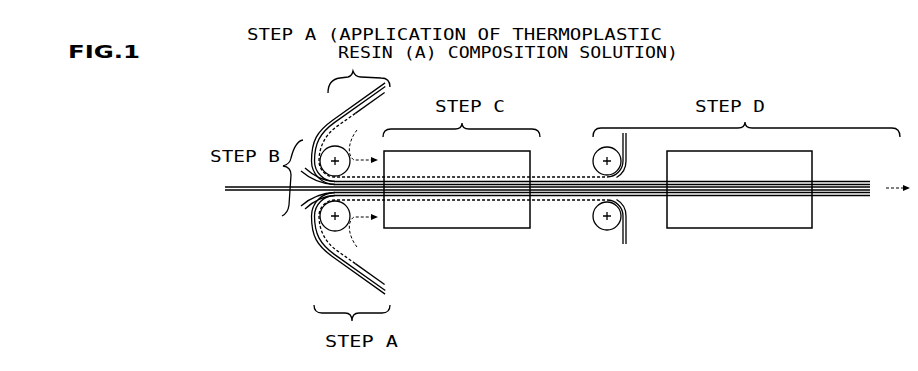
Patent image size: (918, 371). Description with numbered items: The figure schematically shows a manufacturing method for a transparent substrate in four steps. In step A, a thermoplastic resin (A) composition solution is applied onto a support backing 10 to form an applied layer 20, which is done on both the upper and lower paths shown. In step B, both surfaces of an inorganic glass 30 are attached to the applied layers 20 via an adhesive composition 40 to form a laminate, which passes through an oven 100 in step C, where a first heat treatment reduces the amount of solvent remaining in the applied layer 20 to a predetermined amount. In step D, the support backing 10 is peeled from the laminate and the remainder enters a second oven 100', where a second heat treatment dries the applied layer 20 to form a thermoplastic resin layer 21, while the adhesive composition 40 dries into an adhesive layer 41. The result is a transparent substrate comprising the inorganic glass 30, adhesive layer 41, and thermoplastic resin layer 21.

The support backing 10 is at (376, 100).
The applied layer 20 is at (331, 119).
The thermoplastic resin layer 21 is at (826, 181).
The inorganic glass 30 is at (230, 192).
The adhesive composition 40 is at (302, 184).
The adhesive layer 41 is at (867, 184).
The oven 100 is at (459, 212).
The oven 100' is at (739, 212).